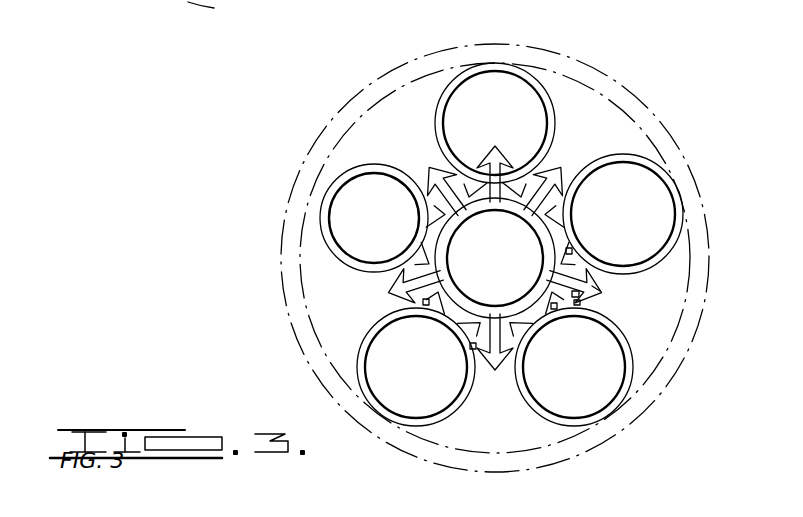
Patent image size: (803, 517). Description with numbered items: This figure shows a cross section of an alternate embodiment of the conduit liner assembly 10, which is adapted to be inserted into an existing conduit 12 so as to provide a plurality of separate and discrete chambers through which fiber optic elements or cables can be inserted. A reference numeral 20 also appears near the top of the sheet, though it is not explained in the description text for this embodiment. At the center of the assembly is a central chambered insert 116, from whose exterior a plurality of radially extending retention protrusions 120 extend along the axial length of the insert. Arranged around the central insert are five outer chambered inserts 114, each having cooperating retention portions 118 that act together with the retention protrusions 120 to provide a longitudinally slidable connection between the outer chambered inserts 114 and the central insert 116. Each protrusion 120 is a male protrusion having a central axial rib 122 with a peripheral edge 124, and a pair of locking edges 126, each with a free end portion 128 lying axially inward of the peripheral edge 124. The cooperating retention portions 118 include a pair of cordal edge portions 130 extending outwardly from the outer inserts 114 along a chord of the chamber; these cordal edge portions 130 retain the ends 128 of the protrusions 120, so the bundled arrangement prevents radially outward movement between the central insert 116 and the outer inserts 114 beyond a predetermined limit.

The conduit liner assembly 10 is at (274, 165).
The conduit 12 is at (276, 245).
The fiber core element 20 is at (233, 11).
The outer chambered inserts 114 is at (517, 67).
The central chambered insert 116 is at (424, 300).
The cooperating retention portions 118 is at (474, 323).
The retention protrusions 120 is at (560, 167).
The central axial rib 122 is at (567, 278).
The peripheral edge 124 is at (597, 290).
The locking edges 126 is at (579, 297).
The free end portion 128 is at (570, 251).
The cordal edge portions 130 is at (426, 304).